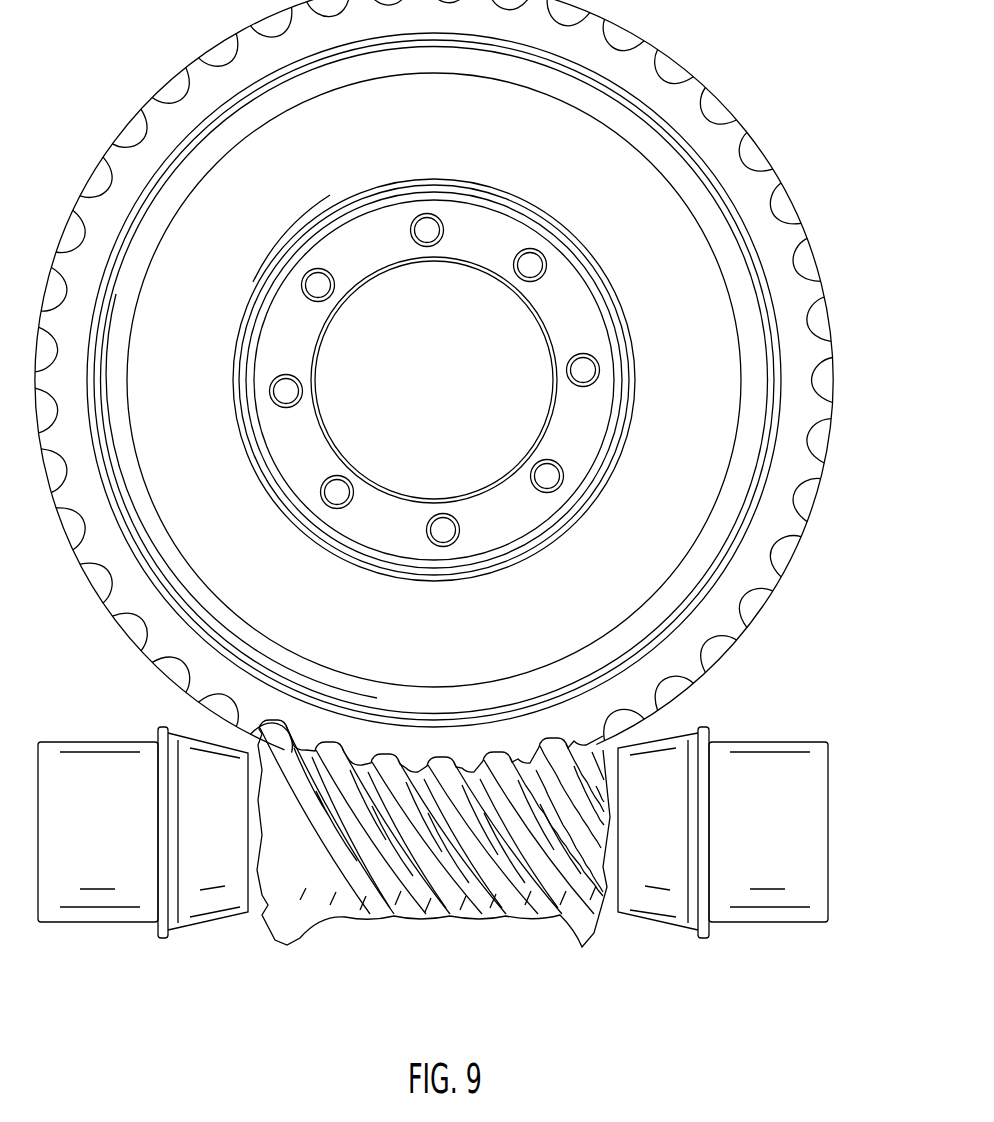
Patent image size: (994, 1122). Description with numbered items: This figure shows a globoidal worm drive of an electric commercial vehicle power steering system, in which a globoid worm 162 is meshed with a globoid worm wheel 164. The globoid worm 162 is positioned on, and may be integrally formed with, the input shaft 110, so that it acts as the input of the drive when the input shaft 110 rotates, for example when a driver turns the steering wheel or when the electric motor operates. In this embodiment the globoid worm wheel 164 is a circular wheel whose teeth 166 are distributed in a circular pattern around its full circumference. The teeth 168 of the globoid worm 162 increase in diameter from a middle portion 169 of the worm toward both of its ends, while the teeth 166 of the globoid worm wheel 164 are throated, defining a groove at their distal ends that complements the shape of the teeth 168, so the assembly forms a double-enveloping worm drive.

The input shaft 110 is at (795, 815).
The globoid worm 162 is at (580, 945).
The globoid worm wheel 164 is at (702, 333).
The teeth 166 is at (787, 557).
The teeth 168 is at (381, 897).
The middle portion 169 is at (433, 912).